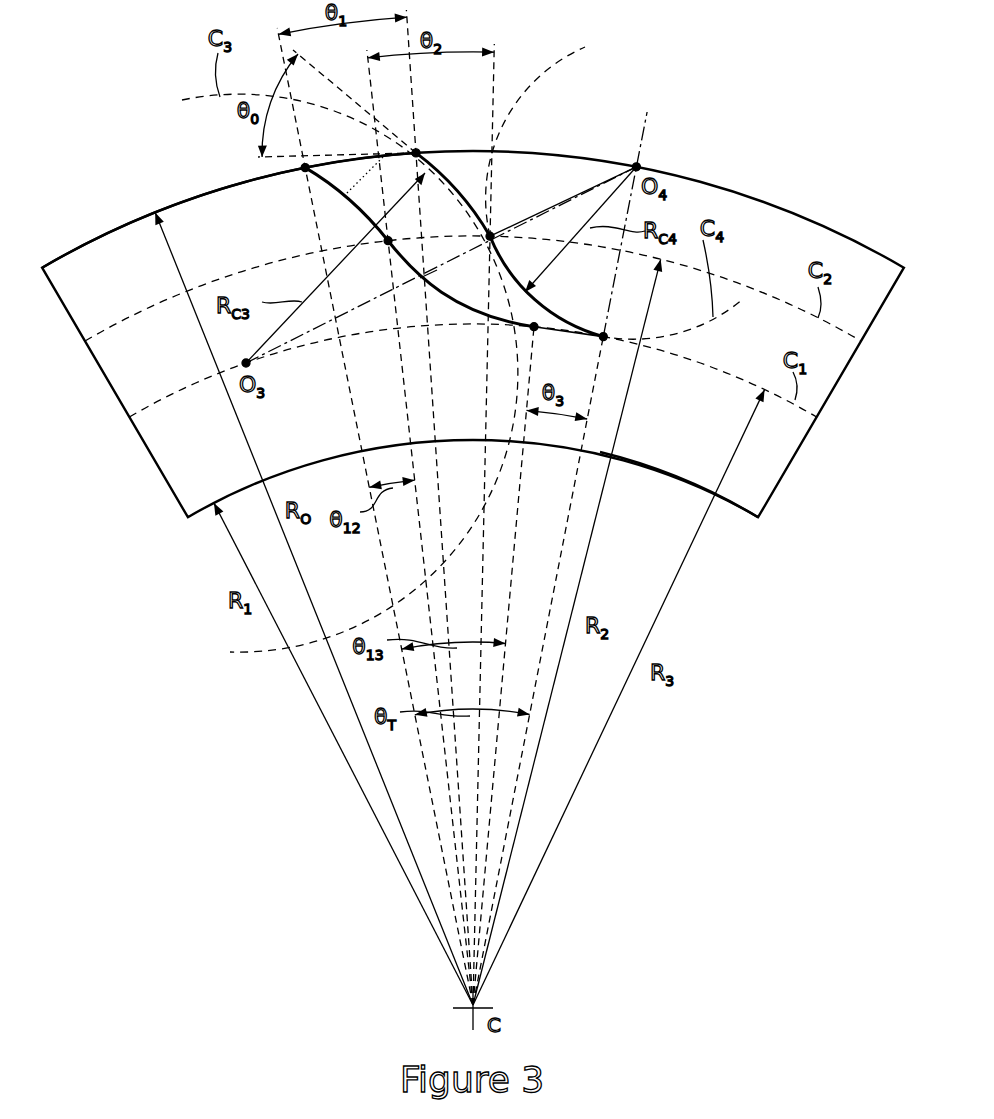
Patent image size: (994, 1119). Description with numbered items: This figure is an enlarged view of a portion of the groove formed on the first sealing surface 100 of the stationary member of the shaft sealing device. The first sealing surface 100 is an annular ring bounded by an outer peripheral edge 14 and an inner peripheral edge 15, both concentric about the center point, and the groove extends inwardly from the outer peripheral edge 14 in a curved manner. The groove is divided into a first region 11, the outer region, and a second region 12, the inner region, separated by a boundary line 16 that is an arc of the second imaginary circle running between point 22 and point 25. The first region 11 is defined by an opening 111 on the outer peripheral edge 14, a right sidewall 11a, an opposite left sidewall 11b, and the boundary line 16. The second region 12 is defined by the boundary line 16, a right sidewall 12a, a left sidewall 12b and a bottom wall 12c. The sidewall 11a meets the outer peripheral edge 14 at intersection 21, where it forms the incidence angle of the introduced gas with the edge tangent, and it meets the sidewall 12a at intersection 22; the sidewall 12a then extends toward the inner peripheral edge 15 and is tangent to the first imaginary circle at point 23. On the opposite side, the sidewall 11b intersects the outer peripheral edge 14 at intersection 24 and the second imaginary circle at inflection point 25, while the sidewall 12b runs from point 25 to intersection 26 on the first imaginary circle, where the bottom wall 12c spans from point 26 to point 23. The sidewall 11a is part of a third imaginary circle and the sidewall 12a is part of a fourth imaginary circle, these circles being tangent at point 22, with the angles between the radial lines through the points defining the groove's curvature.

The first sealing surface 100 is at (832, 236).
The outer peripheral edge 14 is at (128, 218).
The inner peripheral edge 15 is at (758, 520).
The first region 11 is at (397, 154).
The sidewall 11a is at (497, 203).
The sidewall 11b is at (336, 192).
The second region 12 is at (505, 224).
The sidewall 12a is at (573, 263).
The sidewall 12b is at (450, 305).
The bottom wall 12c is at (553, 328).
The opening 111 is at (332, 160).
The boundary line 16 is at (420, 278).
The intersection 21 is at (429, 137).
The intersection 22 is at (504, 225).
The intersection 23 is at (619, 327).
The intersection 24 is at (294, 181).
The intersection 25 is at (377, 254).
The intersection 26 is at (520, 340).